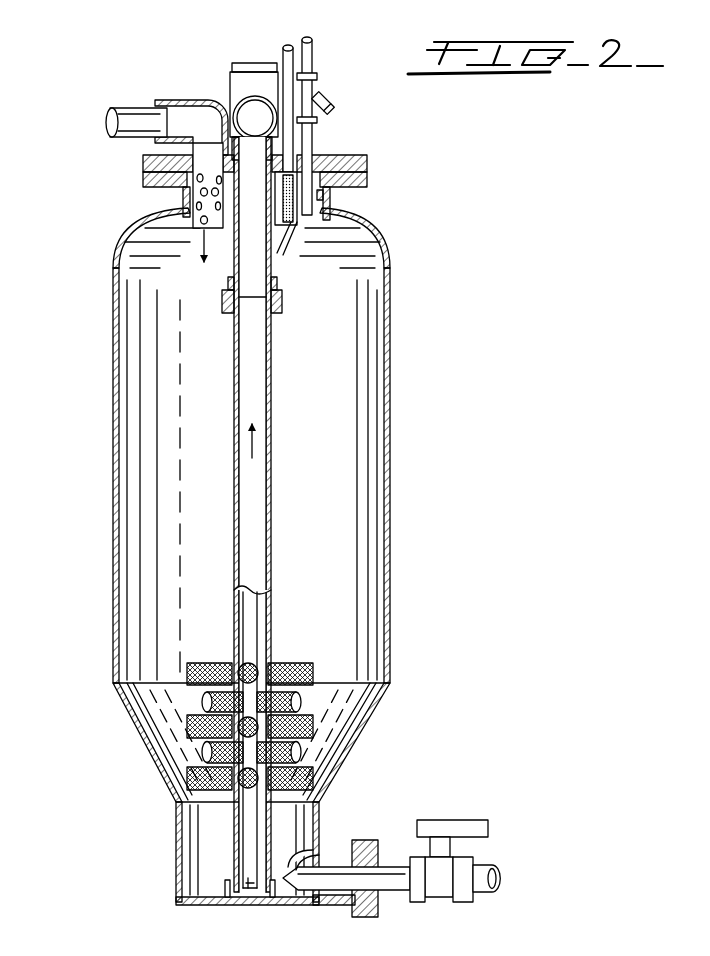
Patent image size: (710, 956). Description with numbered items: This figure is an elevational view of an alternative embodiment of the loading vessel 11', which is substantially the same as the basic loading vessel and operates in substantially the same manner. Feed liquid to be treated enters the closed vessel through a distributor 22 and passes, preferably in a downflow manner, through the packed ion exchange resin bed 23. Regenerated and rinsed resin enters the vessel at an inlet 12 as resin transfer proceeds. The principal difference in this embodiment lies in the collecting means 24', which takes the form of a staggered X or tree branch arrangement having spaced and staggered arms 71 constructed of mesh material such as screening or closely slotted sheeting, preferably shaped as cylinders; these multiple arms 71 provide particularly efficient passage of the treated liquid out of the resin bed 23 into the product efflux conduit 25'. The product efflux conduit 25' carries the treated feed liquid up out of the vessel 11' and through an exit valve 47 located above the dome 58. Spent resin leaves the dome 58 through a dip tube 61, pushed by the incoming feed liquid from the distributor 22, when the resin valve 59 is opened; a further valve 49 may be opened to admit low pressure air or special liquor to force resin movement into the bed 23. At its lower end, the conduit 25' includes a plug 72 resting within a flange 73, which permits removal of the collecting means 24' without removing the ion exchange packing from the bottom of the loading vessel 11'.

The loading vessel 11' is at (282, 556).
The inlet 12 is at (288, 870).
The distributor 22 is at (198, 196).
The packed ion exchange resin bed 23 is at (252, 480).
The collecting means 24' is at (353, 750).
The product efflux conduit 25' is at (270, 514).
The exit valve 47 is at (238, 88).
The valve 49 is at (447, 823).
The dome 58 is at (162, 258).
The resin valve 59 is at (318, 97).
The dip tube 61 is at (292, 244).
The arms 71 is at (195, 635).
The plug 72 is at (248, 880).
The flange 73 is at (225, 890).